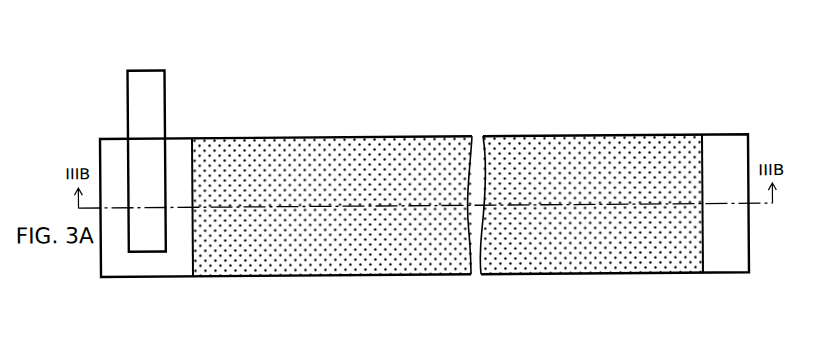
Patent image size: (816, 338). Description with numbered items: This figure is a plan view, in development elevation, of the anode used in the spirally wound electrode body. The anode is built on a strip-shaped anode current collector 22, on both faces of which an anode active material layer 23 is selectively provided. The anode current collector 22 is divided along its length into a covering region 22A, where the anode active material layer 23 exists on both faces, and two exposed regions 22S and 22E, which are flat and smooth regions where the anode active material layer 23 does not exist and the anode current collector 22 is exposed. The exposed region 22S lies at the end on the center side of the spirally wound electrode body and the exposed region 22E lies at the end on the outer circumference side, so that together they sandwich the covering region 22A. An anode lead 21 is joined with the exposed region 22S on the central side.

The anode lead 21 is at (147, 78).
The anode current collector 22 is at (718, 153).
The exposed region 22S is at (192, 292).
The covering region 22A is at (702, 292).
The exposed region 22E is at (748, 292).
The anode active material layer 23 is at (498, 142).